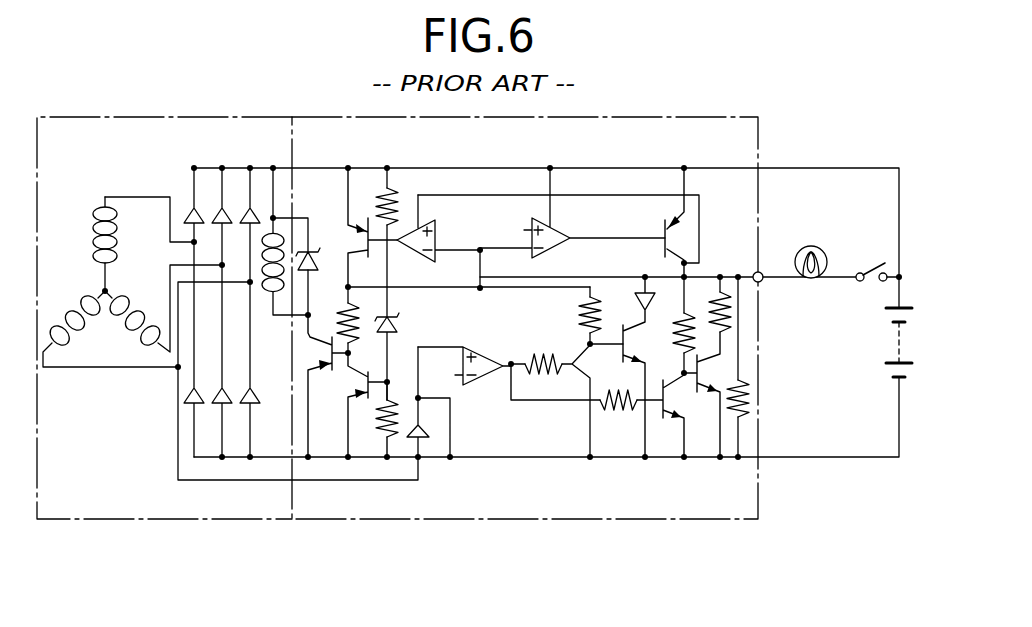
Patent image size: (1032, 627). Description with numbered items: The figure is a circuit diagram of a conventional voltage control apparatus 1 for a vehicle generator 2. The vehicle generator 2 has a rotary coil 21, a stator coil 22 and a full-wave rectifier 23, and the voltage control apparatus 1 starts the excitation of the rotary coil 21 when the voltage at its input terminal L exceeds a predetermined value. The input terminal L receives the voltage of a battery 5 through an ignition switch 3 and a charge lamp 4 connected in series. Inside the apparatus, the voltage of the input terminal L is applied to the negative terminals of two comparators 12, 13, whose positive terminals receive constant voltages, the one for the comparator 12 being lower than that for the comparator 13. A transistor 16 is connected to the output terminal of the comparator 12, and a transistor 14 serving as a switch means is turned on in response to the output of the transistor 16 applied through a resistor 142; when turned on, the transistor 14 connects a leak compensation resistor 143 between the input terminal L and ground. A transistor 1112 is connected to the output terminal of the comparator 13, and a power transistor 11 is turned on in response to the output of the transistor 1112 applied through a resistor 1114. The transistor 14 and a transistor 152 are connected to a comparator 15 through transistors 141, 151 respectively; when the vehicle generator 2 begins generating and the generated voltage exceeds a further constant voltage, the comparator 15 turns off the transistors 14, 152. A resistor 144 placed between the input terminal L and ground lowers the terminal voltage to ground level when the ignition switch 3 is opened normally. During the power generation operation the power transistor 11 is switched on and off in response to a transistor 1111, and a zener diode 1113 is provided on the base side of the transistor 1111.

The voltage control apparatus 1 is at (355, 521).
The vehicle generator 2 is at (127, 521).
The ignition switch 3 is at (878, 266).
The charge lamp 4 is at (808, 246).
The battery 5 is at (893, 352).
The power transistor 11 is at (316, 372).
The comparator 12 is at (558, 230).
The comparator 13 is at (407, 225).
The transistor 14 is at (707, 370).
The comparator 15 is at (486, 386).
The transistor 16 is at (674, 222).
The rotary coil 21 is at (306, 222).
The stator coil 22 is at (95, 287).
The full-wave rectifier 23 is at (200, 235).
The transistor 141 is at (682, 405).
The resistor 142 is at (698, 344).
The leak compensation resistor 143 is at (733, 322).
The resistor 144 is at (750, 408).
The transistor 151 is at (583, 352).
The transistor 152 is at (620, 352).
The transistor 1111 is at (368, 420).
The transistor 1112 is at (354, 220).
The zener diode 1113 is at (396, 325).
The resistor 1114 is at (367, 310).
The input terminal L is at (760, 283).